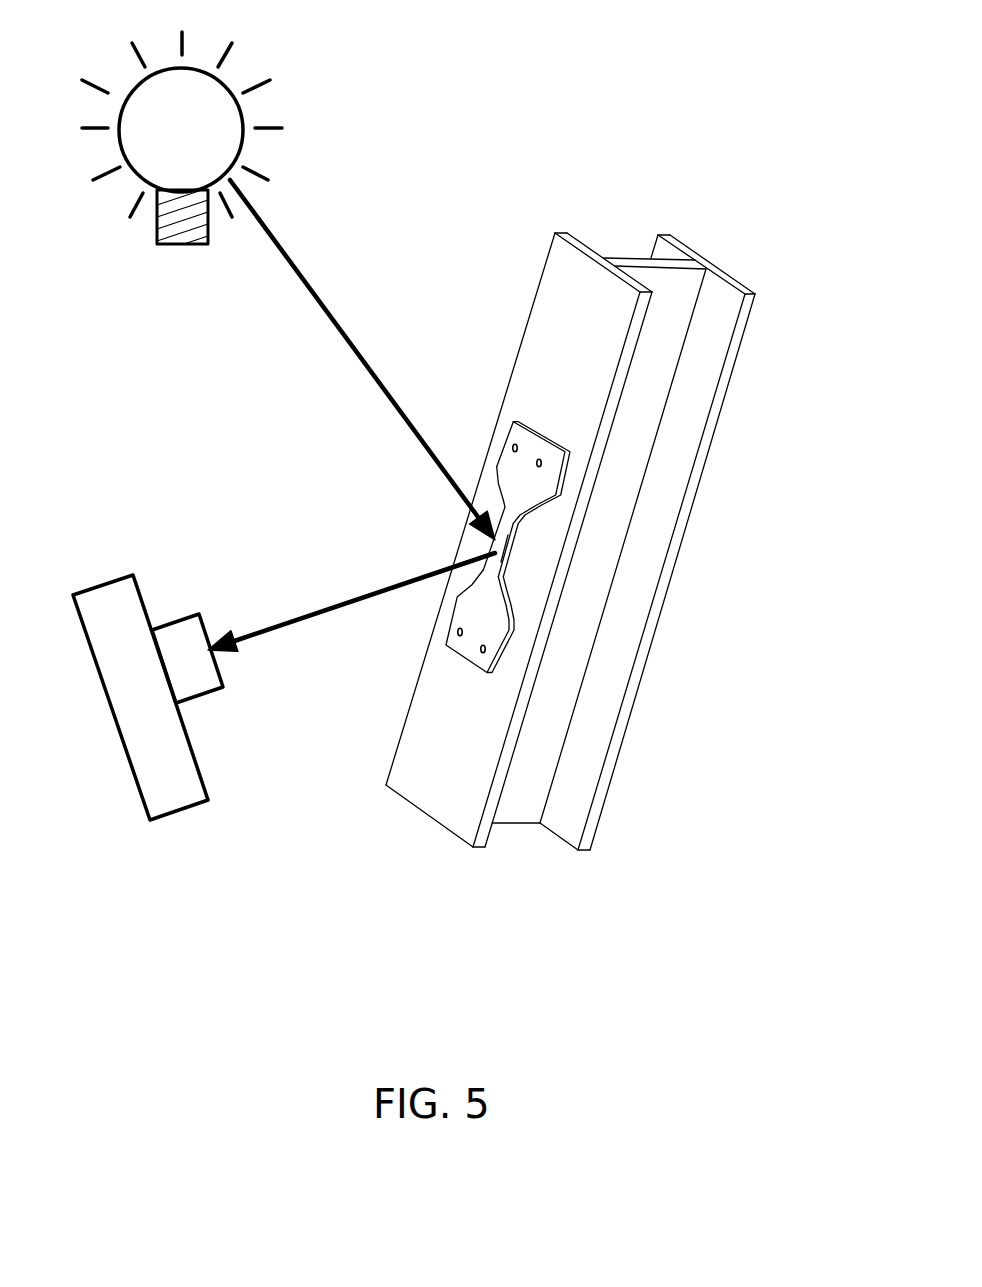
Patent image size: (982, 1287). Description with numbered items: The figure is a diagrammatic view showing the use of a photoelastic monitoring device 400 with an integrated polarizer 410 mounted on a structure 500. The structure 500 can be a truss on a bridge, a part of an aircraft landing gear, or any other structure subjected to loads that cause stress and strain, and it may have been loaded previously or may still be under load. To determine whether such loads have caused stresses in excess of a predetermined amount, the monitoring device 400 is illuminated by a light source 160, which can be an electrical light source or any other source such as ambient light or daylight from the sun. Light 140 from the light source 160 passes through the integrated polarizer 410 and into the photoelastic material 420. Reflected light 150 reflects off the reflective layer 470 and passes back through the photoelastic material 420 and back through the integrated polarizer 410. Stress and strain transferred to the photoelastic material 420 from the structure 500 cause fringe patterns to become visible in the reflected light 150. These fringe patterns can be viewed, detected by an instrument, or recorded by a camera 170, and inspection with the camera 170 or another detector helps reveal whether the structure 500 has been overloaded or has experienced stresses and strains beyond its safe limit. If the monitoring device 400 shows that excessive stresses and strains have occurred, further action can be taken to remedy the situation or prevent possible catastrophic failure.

The light 140 is at (300, 282).
The reflected light 150 is at (305, 617).
The light source 160 is at (245, 142).
The camera 170 is at (107, 592).
The monitoring device 400 is at (568, 521).
The integrated polarizer 410 is at (500, 520).
The photoelastic material 420 is at (477, 607).
The reflective layer 470 is at (505, 555).
The structure 500 is at (432, 817).